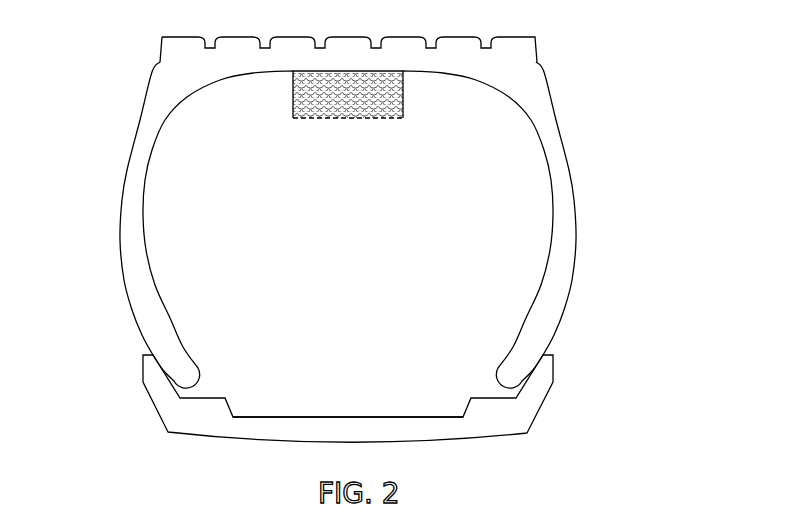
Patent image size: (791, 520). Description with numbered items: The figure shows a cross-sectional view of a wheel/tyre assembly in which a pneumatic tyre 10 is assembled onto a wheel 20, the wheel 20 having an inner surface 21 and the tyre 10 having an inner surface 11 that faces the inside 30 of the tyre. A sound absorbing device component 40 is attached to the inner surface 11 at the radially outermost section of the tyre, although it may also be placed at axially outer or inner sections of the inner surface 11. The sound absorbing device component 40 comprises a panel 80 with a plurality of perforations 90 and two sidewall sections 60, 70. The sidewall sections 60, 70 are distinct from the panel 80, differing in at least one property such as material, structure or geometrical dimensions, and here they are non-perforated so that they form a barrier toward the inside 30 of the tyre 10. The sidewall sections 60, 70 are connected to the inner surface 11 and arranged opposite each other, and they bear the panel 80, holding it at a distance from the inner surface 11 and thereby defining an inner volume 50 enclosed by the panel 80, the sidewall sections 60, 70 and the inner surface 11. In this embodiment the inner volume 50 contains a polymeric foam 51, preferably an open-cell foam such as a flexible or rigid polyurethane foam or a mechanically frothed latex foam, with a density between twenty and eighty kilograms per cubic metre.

The pneumatic tyre 10 is at (550, 282).
The inner surface of the tyre 11 is at (167, 313).
The wheel 20 is at (172, 412).
The inner surface of the wheel 21 is at (318, 416).
The inside of the tyre 30 is at (525, 218).
The sound absorbing device component 40 is at (292, 157).
The inner volume 50 is at (382, 95).
The polymeric foam 51 is at (343, 90).
The sidewall section 60 is at (405, 80).
The sidewall section 70 is at (292, 92).
The panel 80 is at (385, 120).
The perforations 90 is at (318, 120).